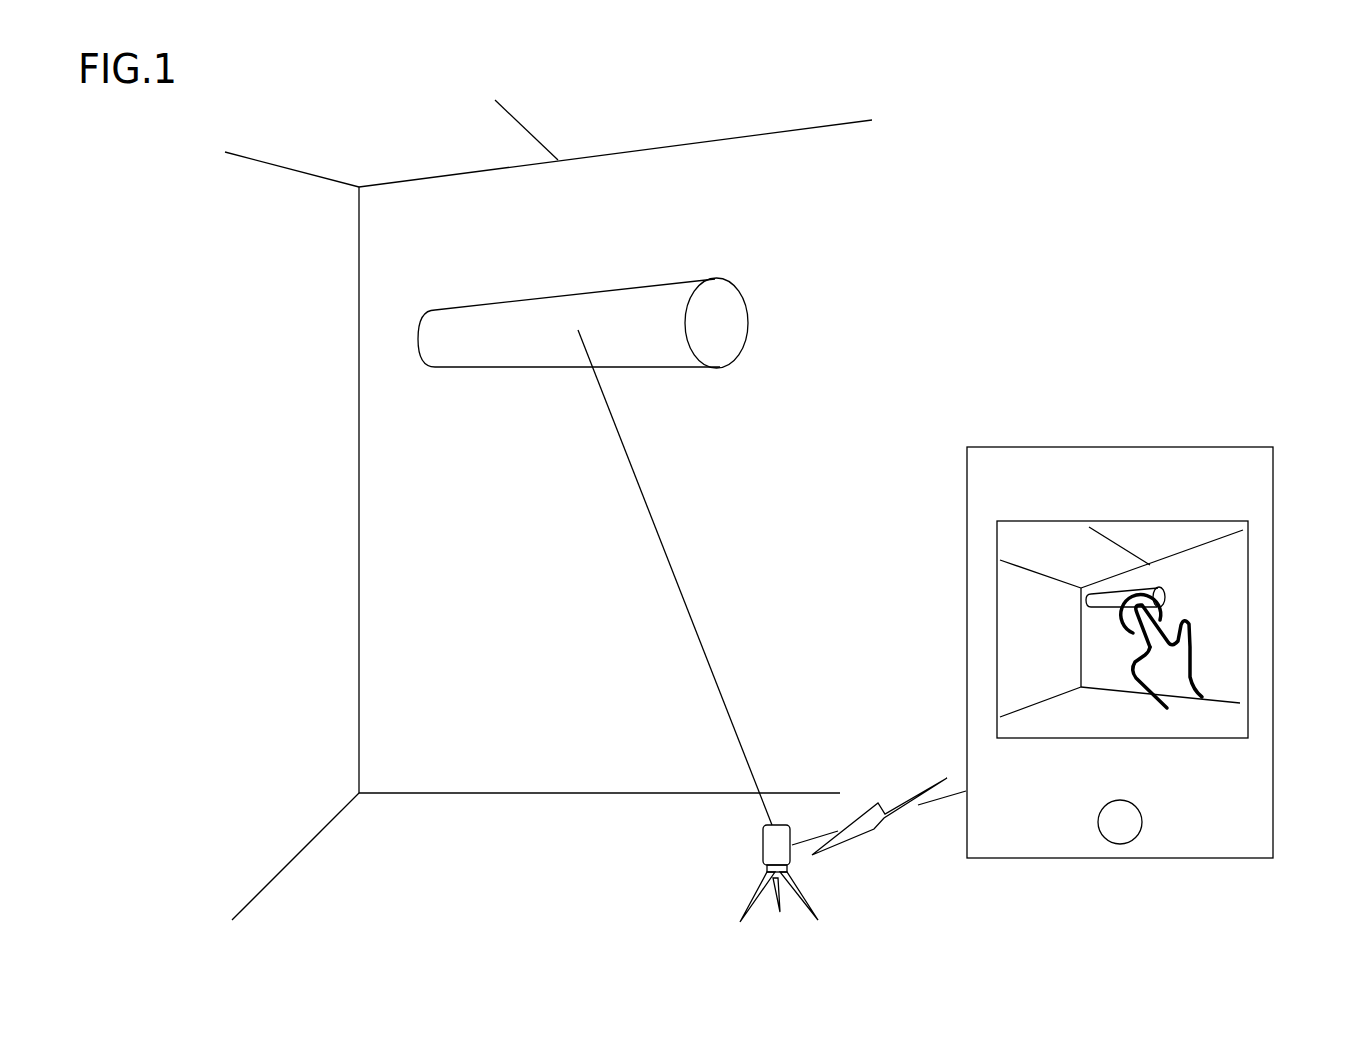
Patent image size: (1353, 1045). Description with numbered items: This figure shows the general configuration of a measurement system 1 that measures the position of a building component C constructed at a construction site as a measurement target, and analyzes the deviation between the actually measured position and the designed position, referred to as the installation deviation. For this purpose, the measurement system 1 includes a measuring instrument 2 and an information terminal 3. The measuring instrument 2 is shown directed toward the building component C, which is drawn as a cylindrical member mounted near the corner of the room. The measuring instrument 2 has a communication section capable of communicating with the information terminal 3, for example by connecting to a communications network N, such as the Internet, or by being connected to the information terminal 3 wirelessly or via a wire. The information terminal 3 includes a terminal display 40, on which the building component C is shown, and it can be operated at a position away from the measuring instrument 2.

The measurement system 1 is at (1013, 262).
The measuring instrument 2 is at (763, 833).
The information terminal 3 is at (1252, 421).
The terminal display 40 is at (1249, 578).
The building component C is at (682, 368).
The communications network N is at (878, 803).